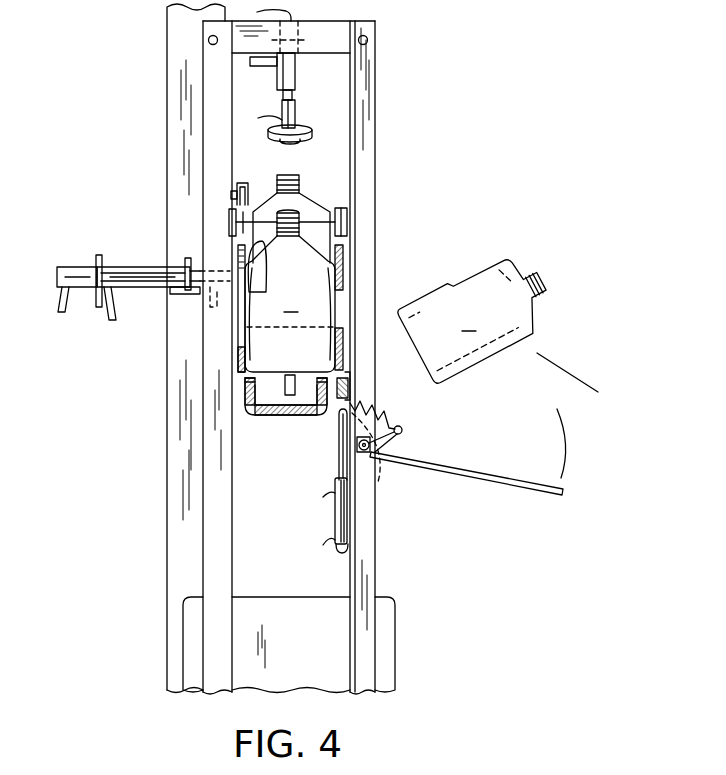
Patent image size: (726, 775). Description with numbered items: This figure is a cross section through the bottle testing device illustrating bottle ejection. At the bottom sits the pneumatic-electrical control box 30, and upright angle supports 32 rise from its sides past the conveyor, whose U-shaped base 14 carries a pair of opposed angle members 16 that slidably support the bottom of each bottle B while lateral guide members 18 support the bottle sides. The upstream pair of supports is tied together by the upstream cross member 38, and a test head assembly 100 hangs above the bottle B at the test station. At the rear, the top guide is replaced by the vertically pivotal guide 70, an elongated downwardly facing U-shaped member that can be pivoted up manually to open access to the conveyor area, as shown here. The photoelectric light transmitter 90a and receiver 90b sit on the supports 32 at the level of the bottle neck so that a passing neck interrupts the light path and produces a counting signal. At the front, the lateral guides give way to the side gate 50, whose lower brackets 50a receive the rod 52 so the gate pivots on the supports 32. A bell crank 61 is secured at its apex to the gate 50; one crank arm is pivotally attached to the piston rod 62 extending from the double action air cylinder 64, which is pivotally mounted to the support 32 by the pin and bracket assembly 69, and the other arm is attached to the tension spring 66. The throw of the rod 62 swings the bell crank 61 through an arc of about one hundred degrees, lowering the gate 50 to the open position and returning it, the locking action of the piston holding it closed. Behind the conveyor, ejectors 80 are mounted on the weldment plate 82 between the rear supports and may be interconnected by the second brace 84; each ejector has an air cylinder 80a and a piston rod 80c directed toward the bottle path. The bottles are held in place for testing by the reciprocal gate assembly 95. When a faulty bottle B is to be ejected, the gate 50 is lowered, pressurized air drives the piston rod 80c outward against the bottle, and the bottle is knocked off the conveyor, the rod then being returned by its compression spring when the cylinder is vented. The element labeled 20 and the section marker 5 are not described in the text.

The U-shaped base 14 is at (262, 413).
The angle members 16 is at (243, 388).
The lateral guide members 18 is at (345, 277).
The tray post 20 is at (290, 395).
The pneumatic-electrical control box 30 is at (308, 659).
The angle supports 32 is at (205, 58).
The upstream cross member 38 is at (308, 24).
The side gate 50 is at (471, 482).
The brackets 50a is at (374, 480).
The rod 52 is at (372, 444).
The bell crank 61 is at (404, 435).
The piston rod 62 is at (345, 443).
The air cylinder 64 is at (341, 516).
The tension spring 66 is at (386, 428).
The pin and bracket assembly 69 is at (346, 547).
The vertically pivotal guide 70 is at (243, 182).
The air cylinder operated ejector 80 is at (140, 294).
The air cylinder 80a is at (137, 272).
The piston rod 80c is at (196, 268).
The weldment plate 82 is at (197, 293).
The second brace 84 is at (97, 262).
The light transmitter 90a is at (229, 220).
The receiver 90b is at (347, 222).
The reciprocal gate assembly 95 is at (68, 262).
The test head assembly 100 is at (313, 115).
The bottle B is at (311, 198).
The section line 5- 5 is at (158, 157).